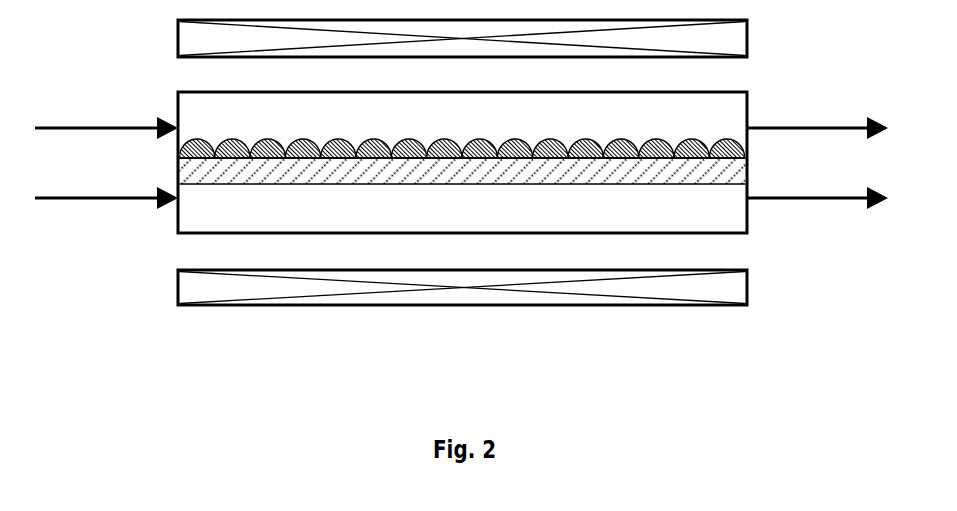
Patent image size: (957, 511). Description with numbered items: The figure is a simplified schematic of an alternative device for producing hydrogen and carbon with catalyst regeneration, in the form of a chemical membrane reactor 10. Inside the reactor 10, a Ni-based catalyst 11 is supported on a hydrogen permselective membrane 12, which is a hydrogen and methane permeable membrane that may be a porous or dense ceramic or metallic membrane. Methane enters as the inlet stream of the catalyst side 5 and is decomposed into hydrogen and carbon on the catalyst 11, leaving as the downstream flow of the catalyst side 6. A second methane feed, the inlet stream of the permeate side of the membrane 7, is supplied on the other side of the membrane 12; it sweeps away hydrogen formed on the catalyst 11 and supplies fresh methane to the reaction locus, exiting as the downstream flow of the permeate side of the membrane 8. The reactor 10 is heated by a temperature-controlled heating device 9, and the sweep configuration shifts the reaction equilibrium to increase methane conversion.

The inlet stream of the catalyst side 5 is at (107, 128).
The downstream flow of the catalyst side 6 is at (817, 128).
The inlet stream of the permeate side of the membrane 7 is at (107, 198).
The downstream flow of the permeate side of the membrane 8 is at (817, 198).
The heating device 9 is at (709, 33).
The chemical reactor 10 is at (213, 233).
The catalyst 11 is at (623, 152).
The hydrogen permselective membrane 12 is at (364, 174).